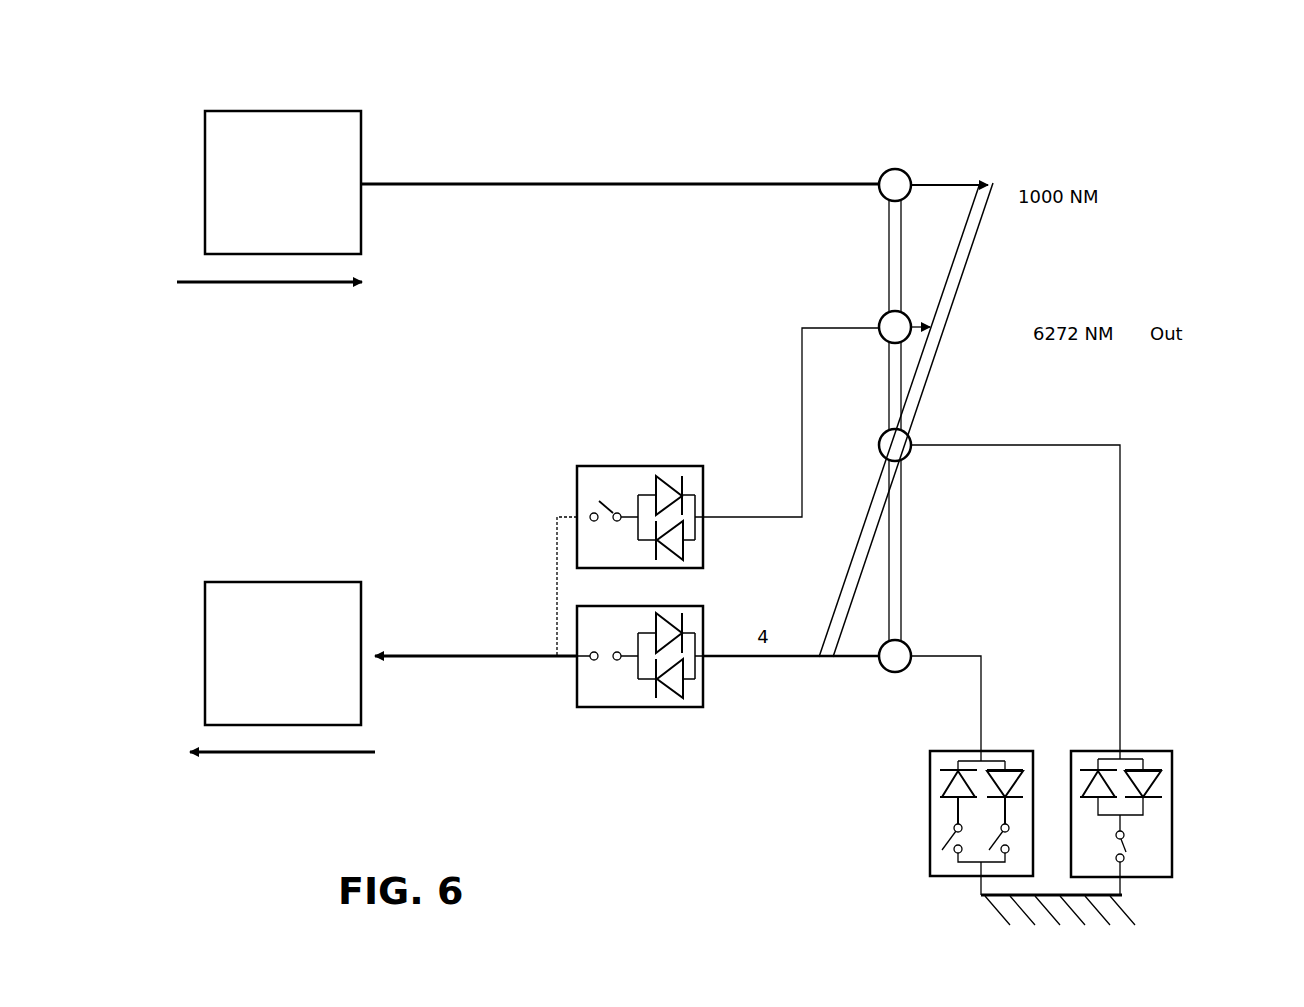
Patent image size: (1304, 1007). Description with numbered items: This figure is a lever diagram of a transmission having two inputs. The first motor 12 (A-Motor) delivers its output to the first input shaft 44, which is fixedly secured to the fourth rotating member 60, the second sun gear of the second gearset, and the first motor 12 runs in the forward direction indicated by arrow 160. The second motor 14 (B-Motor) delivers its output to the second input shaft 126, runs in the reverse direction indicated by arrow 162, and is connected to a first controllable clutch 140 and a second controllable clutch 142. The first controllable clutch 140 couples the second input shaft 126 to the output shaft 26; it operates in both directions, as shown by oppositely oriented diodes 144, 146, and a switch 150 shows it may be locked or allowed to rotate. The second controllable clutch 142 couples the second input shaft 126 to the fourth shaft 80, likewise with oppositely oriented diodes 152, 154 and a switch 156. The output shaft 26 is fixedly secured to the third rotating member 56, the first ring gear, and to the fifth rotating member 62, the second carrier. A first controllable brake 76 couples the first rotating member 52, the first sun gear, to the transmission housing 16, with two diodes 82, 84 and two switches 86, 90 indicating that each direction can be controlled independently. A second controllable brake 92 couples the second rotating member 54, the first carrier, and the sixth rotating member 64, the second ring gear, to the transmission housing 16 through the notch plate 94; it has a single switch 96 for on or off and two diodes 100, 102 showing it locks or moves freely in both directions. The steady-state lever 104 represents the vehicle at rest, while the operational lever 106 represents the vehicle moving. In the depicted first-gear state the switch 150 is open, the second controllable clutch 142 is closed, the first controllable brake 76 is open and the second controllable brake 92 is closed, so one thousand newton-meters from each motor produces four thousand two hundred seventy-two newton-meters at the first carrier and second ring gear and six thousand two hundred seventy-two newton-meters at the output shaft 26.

The first motor 12 is at (288, 111).
The second motor 14 is at (288, 582).
The transmission housing 16 is at (1000, 898).
The output shaft 26 is at (802, 360).
The first input shaft 44 is at (530, 186).
The first rotating member 52 is at (882, 668).
The second rotating member 54 is at (879, 445).
The third rotating member 56 is at (887, 340).
The fourth rotating member 60 is at (898, 170).
The fifth rotating member 62 is at (905, 314).
The sixth rotating member 64 is at (910, 438).
The first controllable brake 76 is at (930, 760).
The fourth shaft 80 is at (981, 698).
The diode 82 is at (940, 782).
The diode 84 is at (1010, 775).
The switch 86 is at (935, 835).
The switch 90 is at (1012, 838).
The second controllable brake 92 is at (1160, 751).
The notch plate 94 is at (1120, 540).
The switch 96 is at (1128, 840).
The diode 100 is at (1098, 778).
The diode 102 is at (1160, 782).
The steady-state lever 104 is at (902, 565).
The operational lever 106 is at (826, 640).
The second input shaft 126 is at (418, 660).
The first controllable clutch 140 is at (577, 487).
The second controllable clutch 142 is at (577, 690).
The diode 144 is at (666, 484).
The diode 146 is at (675, 563).
The switch 150 is at (606, 508).
The diode 152 is at (668, 626).
The diode 154 is at (672, 700).
The switch 156 is at (607, 665).
The arrow 160 is at (275, 285).
The arrow 162 is at (275, 755).